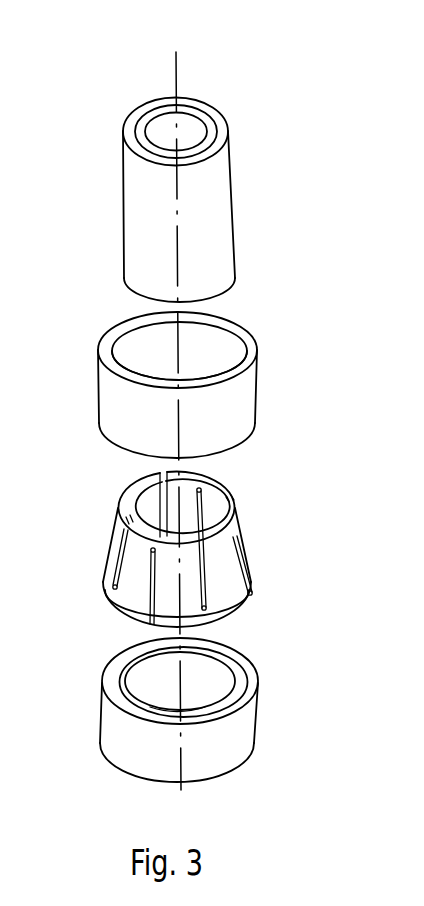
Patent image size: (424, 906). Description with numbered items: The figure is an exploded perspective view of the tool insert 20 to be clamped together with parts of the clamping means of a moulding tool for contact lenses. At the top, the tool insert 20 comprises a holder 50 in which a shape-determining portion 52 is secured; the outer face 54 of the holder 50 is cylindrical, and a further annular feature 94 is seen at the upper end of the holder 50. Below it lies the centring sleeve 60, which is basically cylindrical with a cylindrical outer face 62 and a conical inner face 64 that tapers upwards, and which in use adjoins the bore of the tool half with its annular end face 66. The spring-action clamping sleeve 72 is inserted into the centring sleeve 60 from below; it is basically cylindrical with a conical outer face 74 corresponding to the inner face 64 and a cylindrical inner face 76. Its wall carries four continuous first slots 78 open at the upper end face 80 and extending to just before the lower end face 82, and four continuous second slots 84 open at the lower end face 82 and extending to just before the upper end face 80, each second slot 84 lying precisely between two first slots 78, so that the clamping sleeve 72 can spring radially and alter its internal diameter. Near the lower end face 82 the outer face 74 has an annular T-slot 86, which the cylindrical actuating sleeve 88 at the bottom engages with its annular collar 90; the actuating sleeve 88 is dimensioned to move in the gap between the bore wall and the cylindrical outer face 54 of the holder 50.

The tool insert 20 is at (252, 189).
The holder 50 is at (122, 193).
The shape-determining portion 52 is at (186, 126).
The outer face of the holder 54 is at (217, 255).
The annular rim 94 is at (222, 132).
The centring sleeve 60 is at (287, 356).
The cylindrical outer face 62 is at (237, 423).
The conical inner face 64 is at (157, 365).
The annular end face 66 is at (247, 348).
The clamping sleeve 72 is at (290, 521).
The conical outer face 74 is at (222, 565).
The cylindrical inner face 76 is at (147, 511).
The first slots 78 is at (207, 586).
The upper end face 80 is at (227, 487).
The lower end face 82 is at (145, 622).
The second slots 84 is at (152, 574).
The annular T-slot 86 is at (222, 619).
The actuating sleeve 88 is at (297, 687).
The annular collar 90 is at (122, 666).